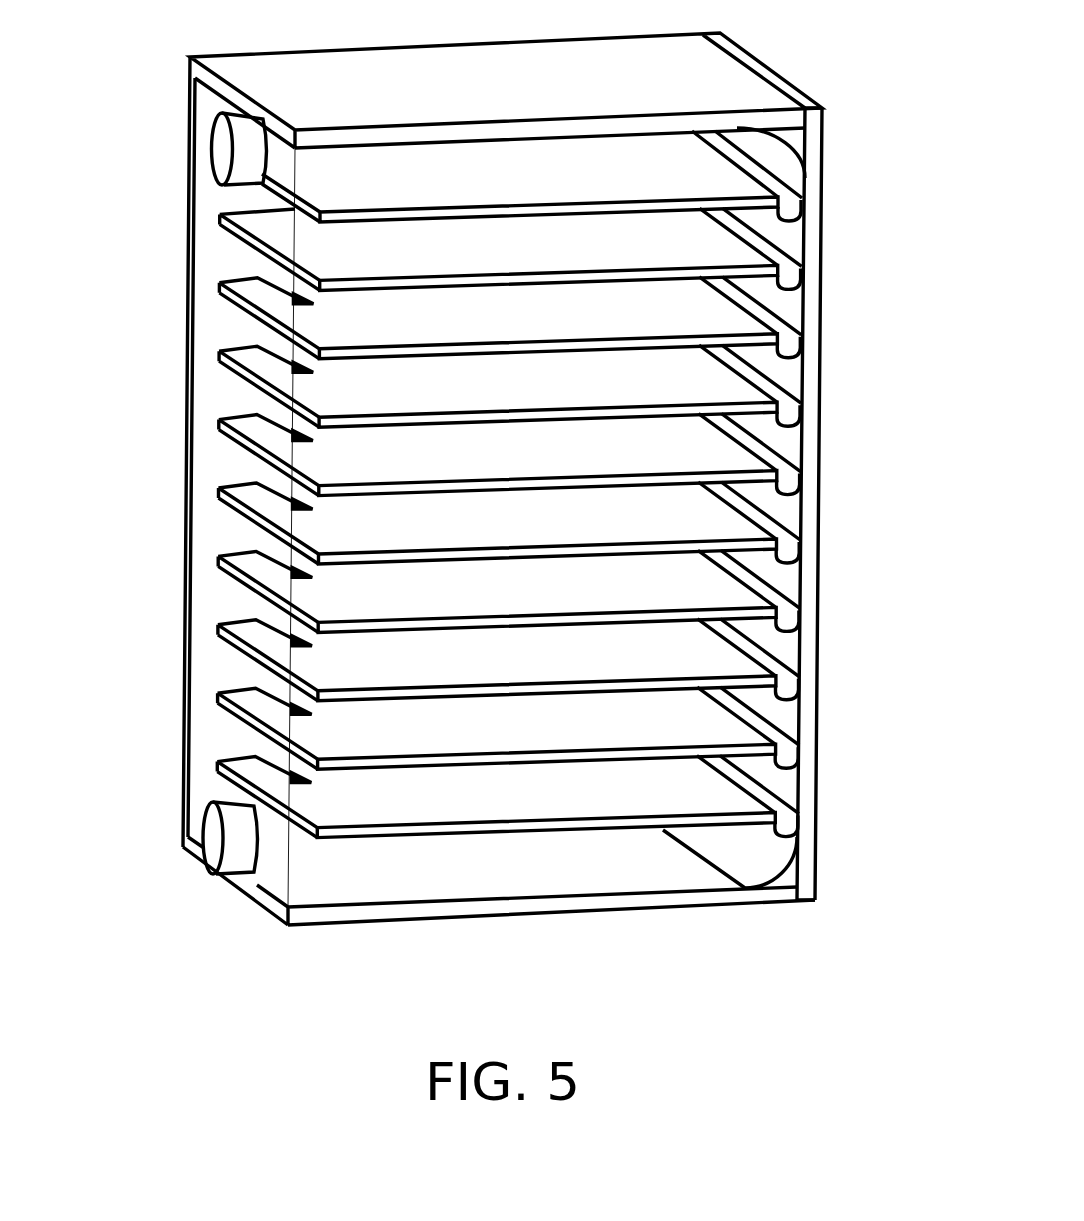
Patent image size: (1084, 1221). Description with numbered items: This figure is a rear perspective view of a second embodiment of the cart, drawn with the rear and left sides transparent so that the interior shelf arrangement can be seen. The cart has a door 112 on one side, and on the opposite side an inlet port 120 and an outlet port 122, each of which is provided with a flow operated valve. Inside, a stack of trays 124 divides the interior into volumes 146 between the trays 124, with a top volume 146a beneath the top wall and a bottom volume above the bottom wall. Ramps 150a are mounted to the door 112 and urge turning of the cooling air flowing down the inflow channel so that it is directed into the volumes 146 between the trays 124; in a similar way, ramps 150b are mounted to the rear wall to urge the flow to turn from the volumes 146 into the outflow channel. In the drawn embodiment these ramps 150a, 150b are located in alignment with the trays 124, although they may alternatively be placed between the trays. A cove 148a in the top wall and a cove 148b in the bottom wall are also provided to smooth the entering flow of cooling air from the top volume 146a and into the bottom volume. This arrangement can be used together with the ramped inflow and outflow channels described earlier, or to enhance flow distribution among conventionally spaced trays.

The door 112 is at (808, 583).
The inlet port 120 is at (222, 160).
The outlet port 122 is at (215, 828).
The interior chamber 124 is at (680, 267).
The volumes 146 is at (558, 429).
The top volume 146a is at (475, 162).
The cove 148a is at (793, 186).
The cove 148b is at (772, 863).
The ramps 150a is at (788, 268).
The ramps 150b is at (232, 252).